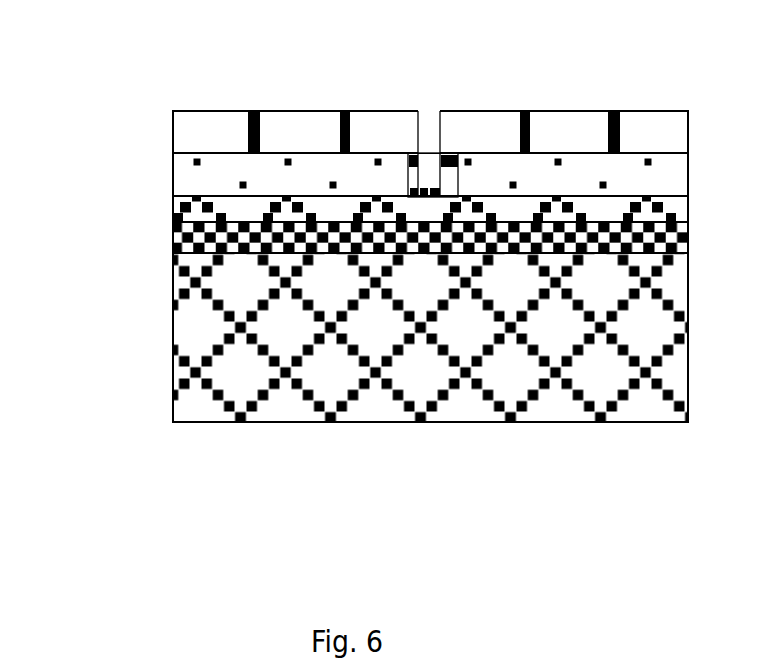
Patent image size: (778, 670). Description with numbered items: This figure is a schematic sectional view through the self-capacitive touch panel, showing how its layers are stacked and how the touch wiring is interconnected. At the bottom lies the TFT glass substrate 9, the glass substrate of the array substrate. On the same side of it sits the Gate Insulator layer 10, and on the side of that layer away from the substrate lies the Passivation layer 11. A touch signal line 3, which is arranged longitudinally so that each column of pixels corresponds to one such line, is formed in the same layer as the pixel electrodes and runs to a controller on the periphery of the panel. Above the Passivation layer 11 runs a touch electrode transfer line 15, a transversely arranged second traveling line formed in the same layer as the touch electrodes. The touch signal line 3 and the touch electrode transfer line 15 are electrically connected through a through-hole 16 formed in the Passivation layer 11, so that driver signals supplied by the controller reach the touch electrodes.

The touch signal line 3 is at (603, 210).
The TFT glass substrate 9 is at (205, 339).
The Gate Insulator (GI) layer 10 is at (190, 229).
The Passivation (PVA) layer 11 is at (192, 177).
The touch electrode transfer line 15 is at (291, 145).
The through-hole 16 is at (434, 180).